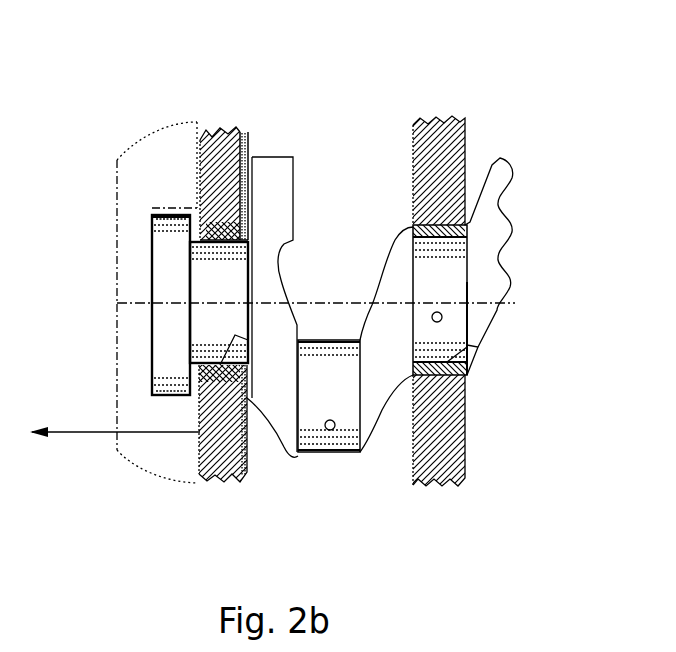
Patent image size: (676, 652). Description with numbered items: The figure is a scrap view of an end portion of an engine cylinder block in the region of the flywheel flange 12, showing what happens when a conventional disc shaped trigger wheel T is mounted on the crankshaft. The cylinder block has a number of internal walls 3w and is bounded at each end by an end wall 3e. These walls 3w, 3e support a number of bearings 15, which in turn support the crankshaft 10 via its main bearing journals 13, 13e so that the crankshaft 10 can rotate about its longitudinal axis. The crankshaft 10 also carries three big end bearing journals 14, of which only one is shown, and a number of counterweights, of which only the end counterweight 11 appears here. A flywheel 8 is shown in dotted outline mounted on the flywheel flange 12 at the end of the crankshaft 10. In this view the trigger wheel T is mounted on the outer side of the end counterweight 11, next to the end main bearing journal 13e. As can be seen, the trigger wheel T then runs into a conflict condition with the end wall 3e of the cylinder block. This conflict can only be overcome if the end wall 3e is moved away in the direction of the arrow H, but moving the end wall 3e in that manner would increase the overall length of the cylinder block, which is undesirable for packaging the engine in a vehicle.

The flywheel 8 is at (117, 160).
The flywheel flange 12 is at (173, 213).
The end wall 3e is at (220, 137).
The trigger wheel T is at (252, 156).
The end counterweight 11 is at (275, 157).
The crankshaft 10 is at (300, 182).
The internal wall 3w is at (433, 125).
The main bearing journal 13 is at (446, 263).
The end main bearing journal 13e is at (209, 288).
The big end bearing journal 14 is at (330, 452).
The bearing 15 is at (235, 335).
The arrow H is at (115, 421).